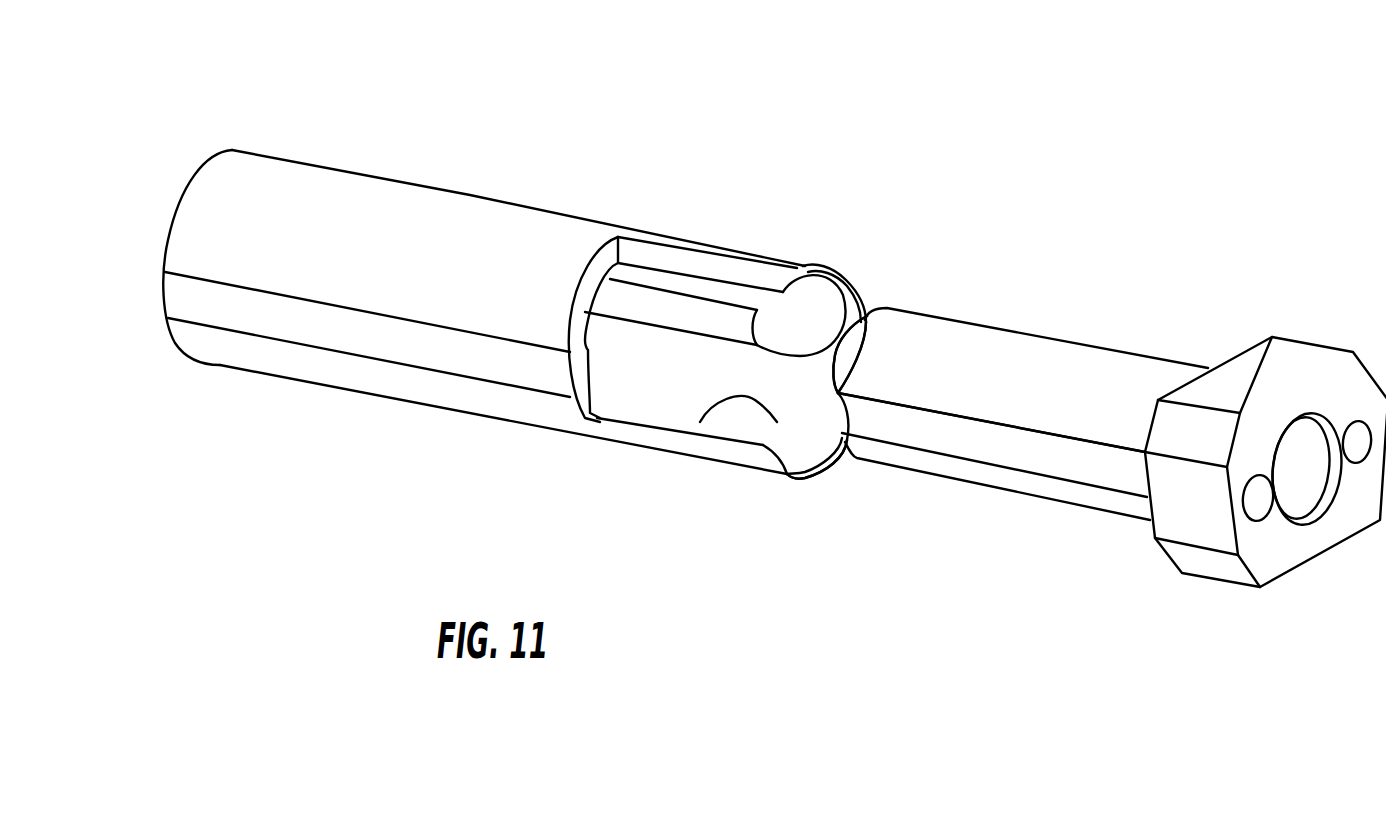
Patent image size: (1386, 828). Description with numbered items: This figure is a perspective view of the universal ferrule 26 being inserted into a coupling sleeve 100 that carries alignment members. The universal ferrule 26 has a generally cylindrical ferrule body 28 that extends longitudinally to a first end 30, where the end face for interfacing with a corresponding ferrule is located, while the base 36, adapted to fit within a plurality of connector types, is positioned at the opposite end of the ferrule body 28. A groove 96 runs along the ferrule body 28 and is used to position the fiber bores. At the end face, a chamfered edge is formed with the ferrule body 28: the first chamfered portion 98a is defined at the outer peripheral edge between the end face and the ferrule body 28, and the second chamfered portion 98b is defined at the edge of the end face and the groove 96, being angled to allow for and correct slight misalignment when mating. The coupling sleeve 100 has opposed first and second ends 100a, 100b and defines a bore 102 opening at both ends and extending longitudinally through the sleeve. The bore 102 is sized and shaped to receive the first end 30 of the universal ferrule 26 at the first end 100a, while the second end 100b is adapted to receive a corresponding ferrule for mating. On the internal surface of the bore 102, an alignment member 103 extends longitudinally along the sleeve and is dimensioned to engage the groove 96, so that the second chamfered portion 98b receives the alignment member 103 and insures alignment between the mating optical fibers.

The universal ferrule 26 is at (1109, 492).
The ferrule body 28 is at (1068, 367).
The first end 30 is at (923, 322).
The base 36 is at (1253, 363).
The groove 96 is at (1044, 456).
The first chamfered portion 98a is at (838, 275).
The second chamfered portion 98b is at (814, 448).
The coupling sleeve 100 is at (340, 455).
The first end of coupling sleeve 100a is at (823, 263).
The second end of coupling sleeve 100b is at (228, 182).
The bore 102 is at (778, 420).
The alignment member 103 is at (670, 305).